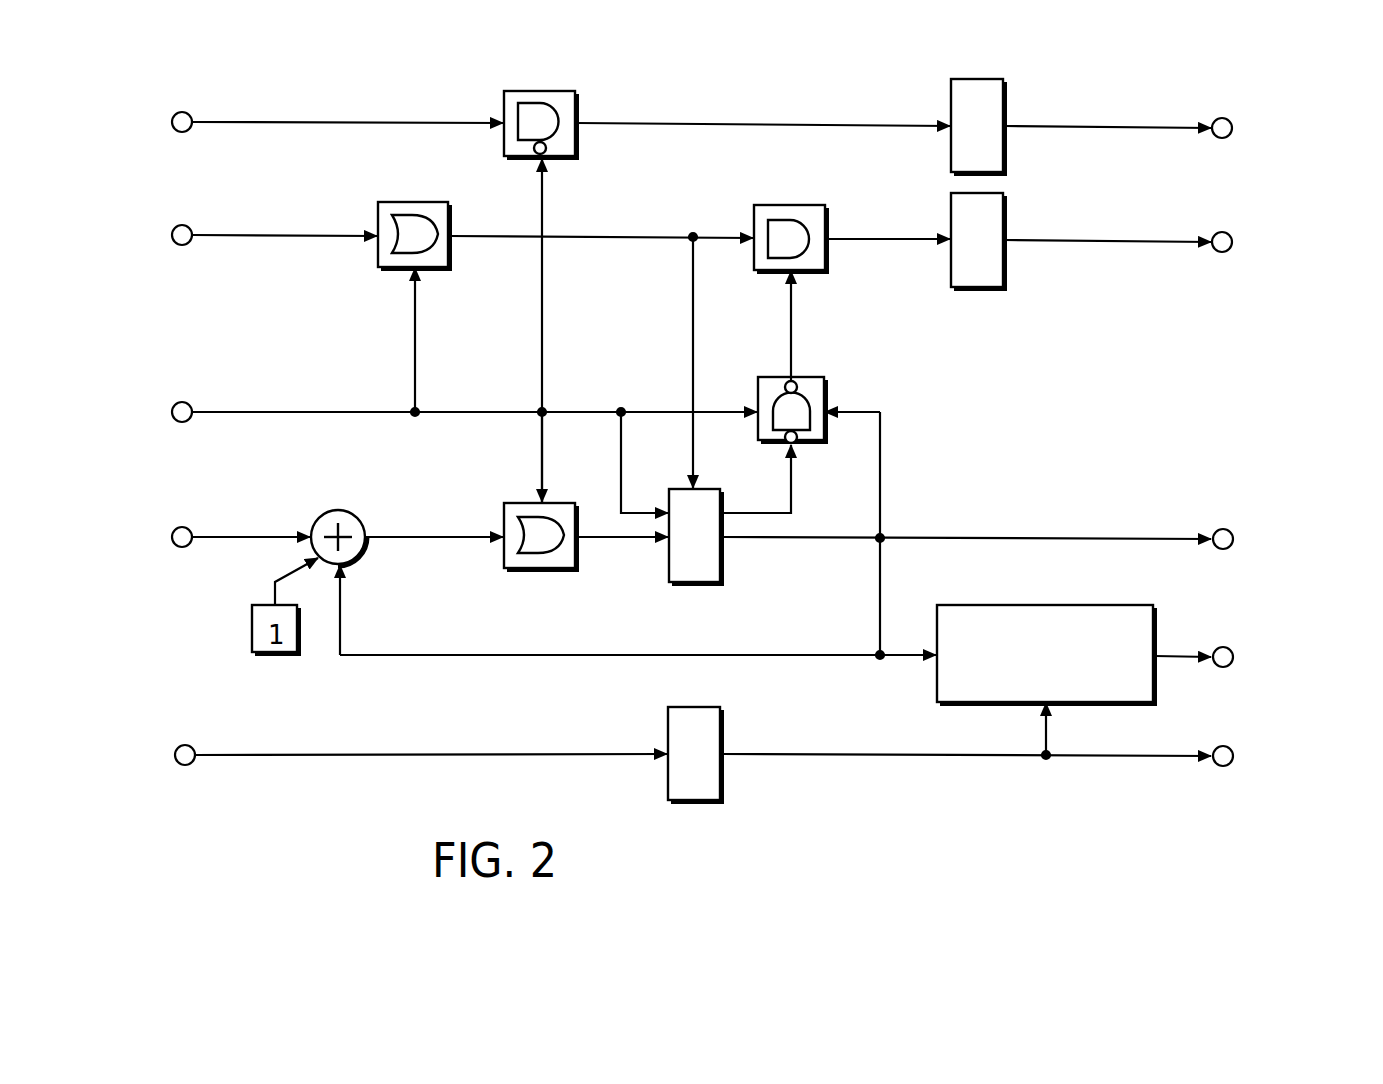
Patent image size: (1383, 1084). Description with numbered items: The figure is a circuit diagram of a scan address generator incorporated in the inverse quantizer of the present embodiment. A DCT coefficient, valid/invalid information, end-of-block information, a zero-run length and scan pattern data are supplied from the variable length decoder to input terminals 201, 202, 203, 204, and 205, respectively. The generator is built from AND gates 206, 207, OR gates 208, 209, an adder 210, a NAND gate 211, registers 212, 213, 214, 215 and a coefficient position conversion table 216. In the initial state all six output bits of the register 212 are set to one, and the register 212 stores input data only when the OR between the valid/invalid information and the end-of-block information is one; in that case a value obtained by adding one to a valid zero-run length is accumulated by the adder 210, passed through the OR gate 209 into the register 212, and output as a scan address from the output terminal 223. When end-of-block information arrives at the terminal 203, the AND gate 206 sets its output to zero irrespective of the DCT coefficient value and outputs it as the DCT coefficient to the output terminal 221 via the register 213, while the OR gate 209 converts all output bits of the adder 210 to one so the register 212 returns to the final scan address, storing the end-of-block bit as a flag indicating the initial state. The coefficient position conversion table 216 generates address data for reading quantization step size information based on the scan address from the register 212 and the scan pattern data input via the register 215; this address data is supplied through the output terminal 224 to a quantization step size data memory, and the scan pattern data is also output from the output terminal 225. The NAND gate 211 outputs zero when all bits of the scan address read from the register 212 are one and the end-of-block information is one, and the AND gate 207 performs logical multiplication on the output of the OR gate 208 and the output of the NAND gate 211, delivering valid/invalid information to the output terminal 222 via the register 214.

The input terminal 201 is at (188, 113).
The input terminal 202 is at (188, 226).
The input terminal 203 is at (188, 403).
The input terminal 204 is at (188, 528).
The input terminal 205 is at (191, 746).
The AND gate 206 is at (545, 91).
The AND gate 207 is at (795, 205).
The OR gate 208 is at (418, 202).
The OR gate 209 is at (543, 570).
The adder 210 is at (343, 511).
The NAND gate 211 is at (826, 386).
The register 212 is at (722, 575).
The register 213 is at (1005, 100).
The register 214 is at (1005, 215).
The register 215 is at (722, 722).
The coefficient position conversion table 216 is at (1032, 605).
The output terminal 221 is at (1228, 119).
The output terminal 222 is at (1228, 233).
The output terminal 223 is at (1229, 530).
The output terminal 224 is at (1229, 648).
The output terminal 225 is at (1229, 747).